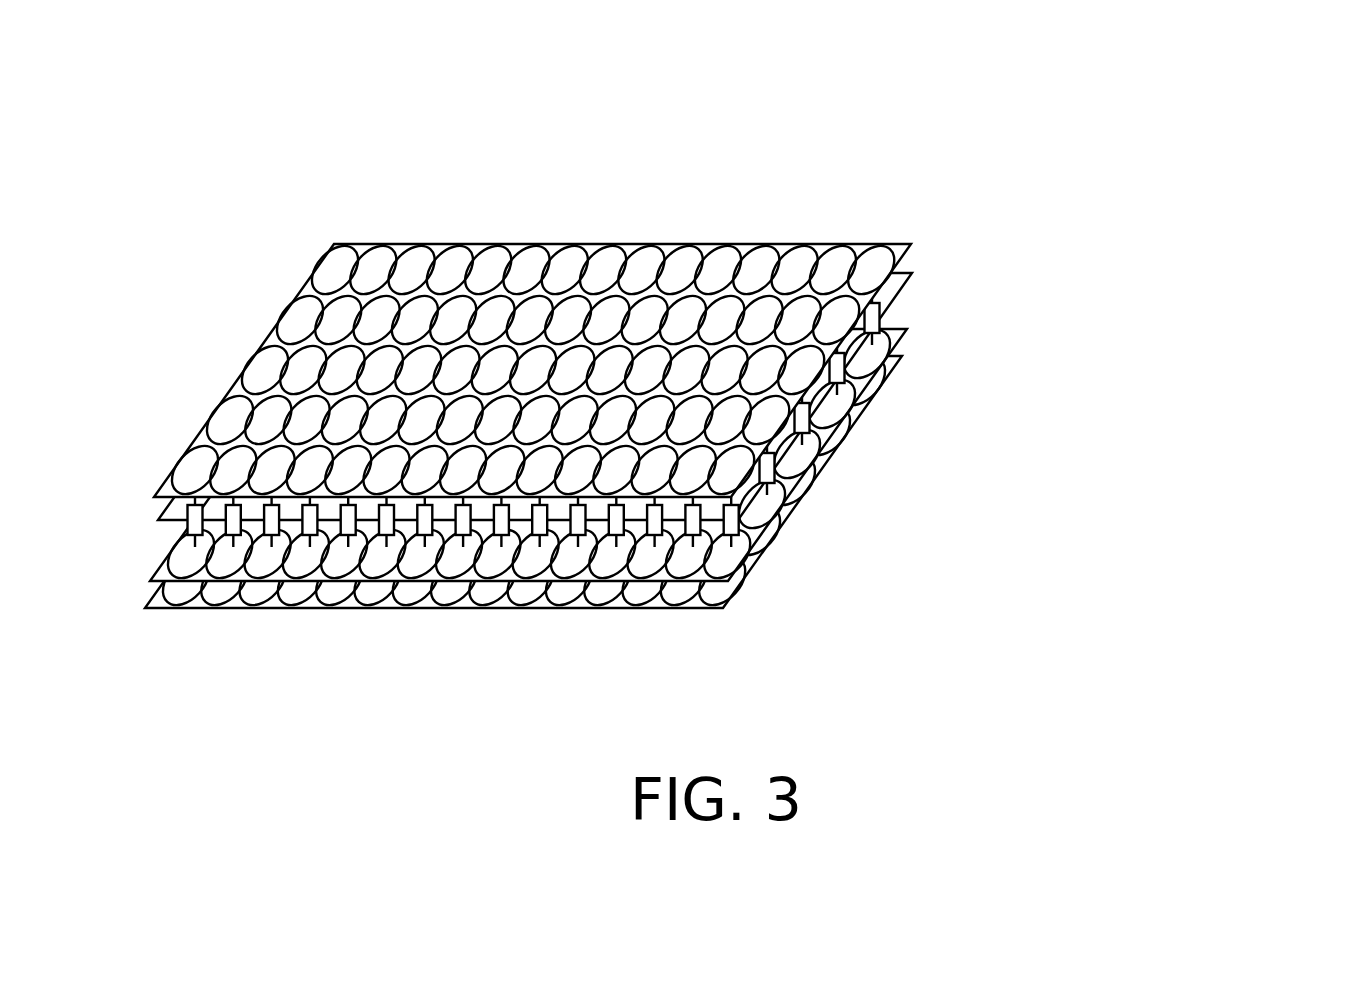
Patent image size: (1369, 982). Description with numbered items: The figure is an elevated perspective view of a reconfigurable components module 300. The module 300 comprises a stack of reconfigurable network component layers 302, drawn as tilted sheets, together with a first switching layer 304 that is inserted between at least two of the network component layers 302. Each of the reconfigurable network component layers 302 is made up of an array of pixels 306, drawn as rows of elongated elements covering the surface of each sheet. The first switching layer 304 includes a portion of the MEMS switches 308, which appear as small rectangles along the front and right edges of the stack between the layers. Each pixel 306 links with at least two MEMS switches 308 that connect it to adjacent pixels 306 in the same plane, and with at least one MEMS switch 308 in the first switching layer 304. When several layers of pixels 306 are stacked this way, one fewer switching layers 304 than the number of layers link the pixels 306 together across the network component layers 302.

The reconfigurable components module 300 is at (702, 379).
The reconfigurable network component layers 302 is at (702, 434).
The first switching layer 304 is at (632, 410).
The pixels 306 is at (332, 272).
The MEMS switches 308 is at (882, 317).